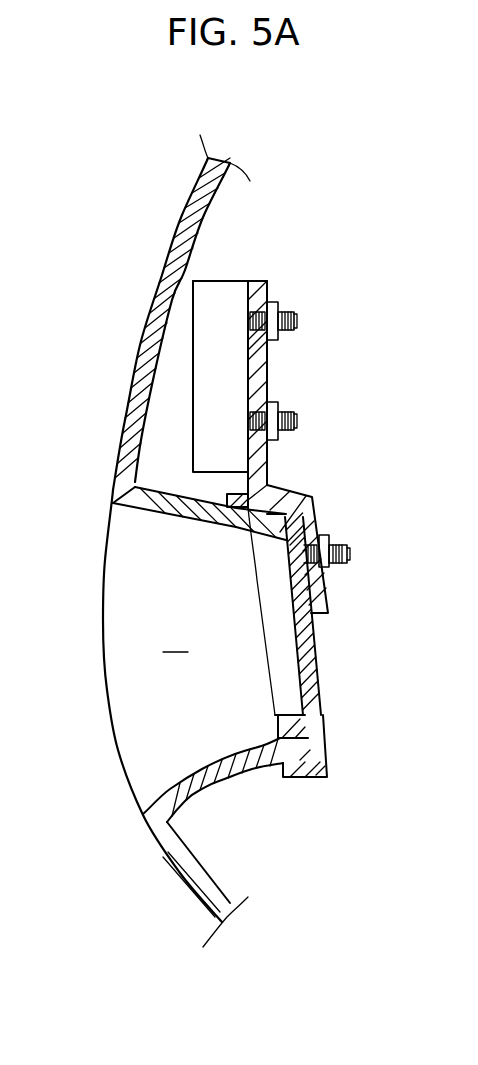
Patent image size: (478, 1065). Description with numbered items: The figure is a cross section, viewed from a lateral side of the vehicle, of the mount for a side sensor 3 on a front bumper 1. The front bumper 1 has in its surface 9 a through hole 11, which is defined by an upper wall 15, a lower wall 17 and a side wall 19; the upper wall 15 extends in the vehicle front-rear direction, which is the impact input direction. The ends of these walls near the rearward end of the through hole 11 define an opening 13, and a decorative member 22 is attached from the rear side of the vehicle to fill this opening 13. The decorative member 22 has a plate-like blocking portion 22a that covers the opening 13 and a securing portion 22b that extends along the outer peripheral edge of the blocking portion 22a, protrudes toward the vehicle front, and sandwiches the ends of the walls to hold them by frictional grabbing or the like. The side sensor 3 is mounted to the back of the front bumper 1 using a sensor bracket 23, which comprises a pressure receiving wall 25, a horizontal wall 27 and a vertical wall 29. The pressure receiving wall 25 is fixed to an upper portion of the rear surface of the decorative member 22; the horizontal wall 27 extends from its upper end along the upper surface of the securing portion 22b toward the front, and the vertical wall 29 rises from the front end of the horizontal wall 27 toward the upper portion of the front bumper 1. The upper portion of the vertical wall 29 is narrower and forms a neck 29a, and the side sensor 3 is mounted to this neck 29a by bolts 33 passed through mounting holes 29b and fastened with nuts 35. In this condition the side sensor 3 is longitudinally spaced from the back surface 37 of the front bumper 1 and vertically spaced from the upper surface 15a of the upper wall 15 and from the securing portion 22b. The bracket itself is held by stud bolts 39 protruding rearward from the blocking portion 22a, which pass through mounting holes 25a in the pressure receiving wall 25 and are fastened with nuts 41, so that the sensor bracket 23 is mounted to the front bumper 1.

The front bumper 1 is at (121, 437).
The side sensor 3 is at (258, 281).
The surface 9 is at (138, 353).
The through hole 11 is at (218, 611).
The opening 13 is at (283, 718).
The upper wall 15 is at (205, 522).
The upper surface 15a is at (172, 494).
The lower wall 17 is at (200, 767).
The side wall 19 is at (120, 620).
The decorative member 22 is at (315, 627).
The blocking portion 22a is at (310, 665).
The securing portion 22b is at (308, 775).
The sensor bracket 23 is at (232, 285).
The pressure receiving wall 25 is at (318, 592).
The mounting holes 25a is at (349, 549).
The horizontal wall 27 is at (285, 493).
The vertical wall 29 is at (268, 466).
The neck 29a is at (260, 356).
The mounting holes 29b is at (296, 321).
The bolts 33 is at (297, 316).
The nuts 35 is at (280, 303).
The back surface 37 is at (197, 245).
The stud bolts 39 is at (347, 558).
The nuts 41 is at (335, 538).